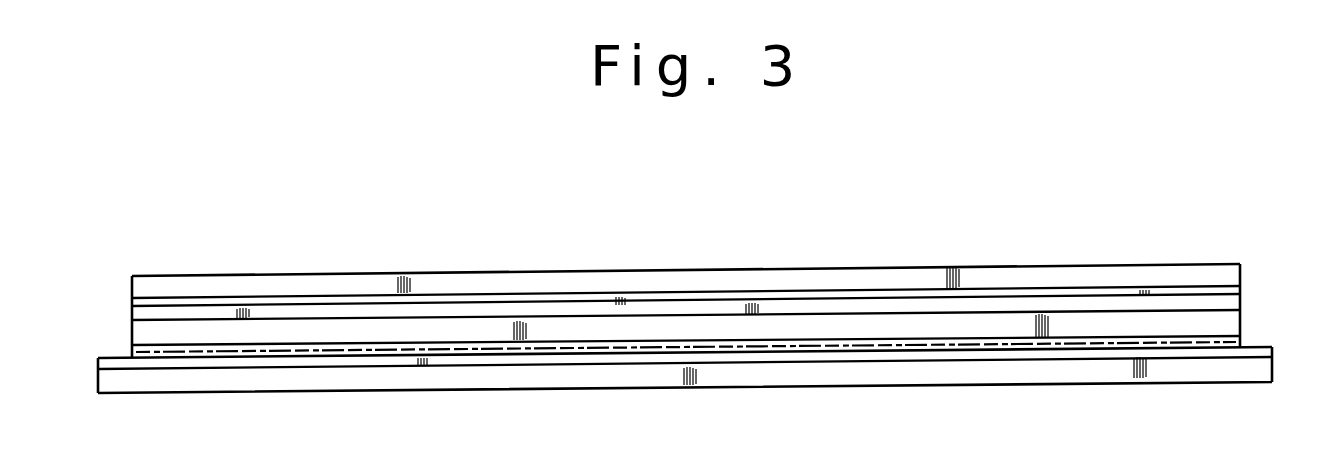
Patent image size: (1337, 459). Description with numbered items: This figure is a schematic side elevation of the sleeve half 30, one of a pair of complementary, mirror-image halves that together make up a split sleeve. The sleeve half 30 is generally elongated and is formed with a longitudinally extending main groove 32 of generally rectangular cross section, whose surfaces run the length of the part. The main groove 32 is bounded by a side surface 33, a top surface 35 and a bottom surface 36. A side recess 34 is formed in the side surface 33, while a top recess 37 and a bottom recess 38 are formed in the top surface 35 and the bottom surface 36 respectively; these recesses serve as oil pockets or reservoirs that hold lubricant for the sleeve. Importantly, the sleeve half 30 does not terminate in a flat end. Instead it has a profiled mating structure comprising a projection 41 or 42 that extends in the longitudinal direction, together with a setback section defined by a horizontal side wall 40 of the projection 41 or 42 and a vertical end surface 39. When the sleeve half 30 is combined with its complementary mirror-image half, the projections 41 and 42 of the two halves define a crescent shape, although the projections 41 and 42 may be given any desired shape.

The sleeve half 30 is at (1107, 265).
The main groove 32 is at (921, 317).
The side surface 33 is at (1186, 300).
The side recess 34 is at (1010, 318).
The top surface 35 is at (831, 302).
The bottom surface 36 is at (962, 345).
The top recess 37 is at (729, 293).
The bottom recess 38 is at (840, 361).
The vertical end surface 39 is at (1242, 320).
The horizontal side wall 40 is at (1262, 346).
The projection 41 is at (1258, 368).
The projection 42 is at (108, 383).